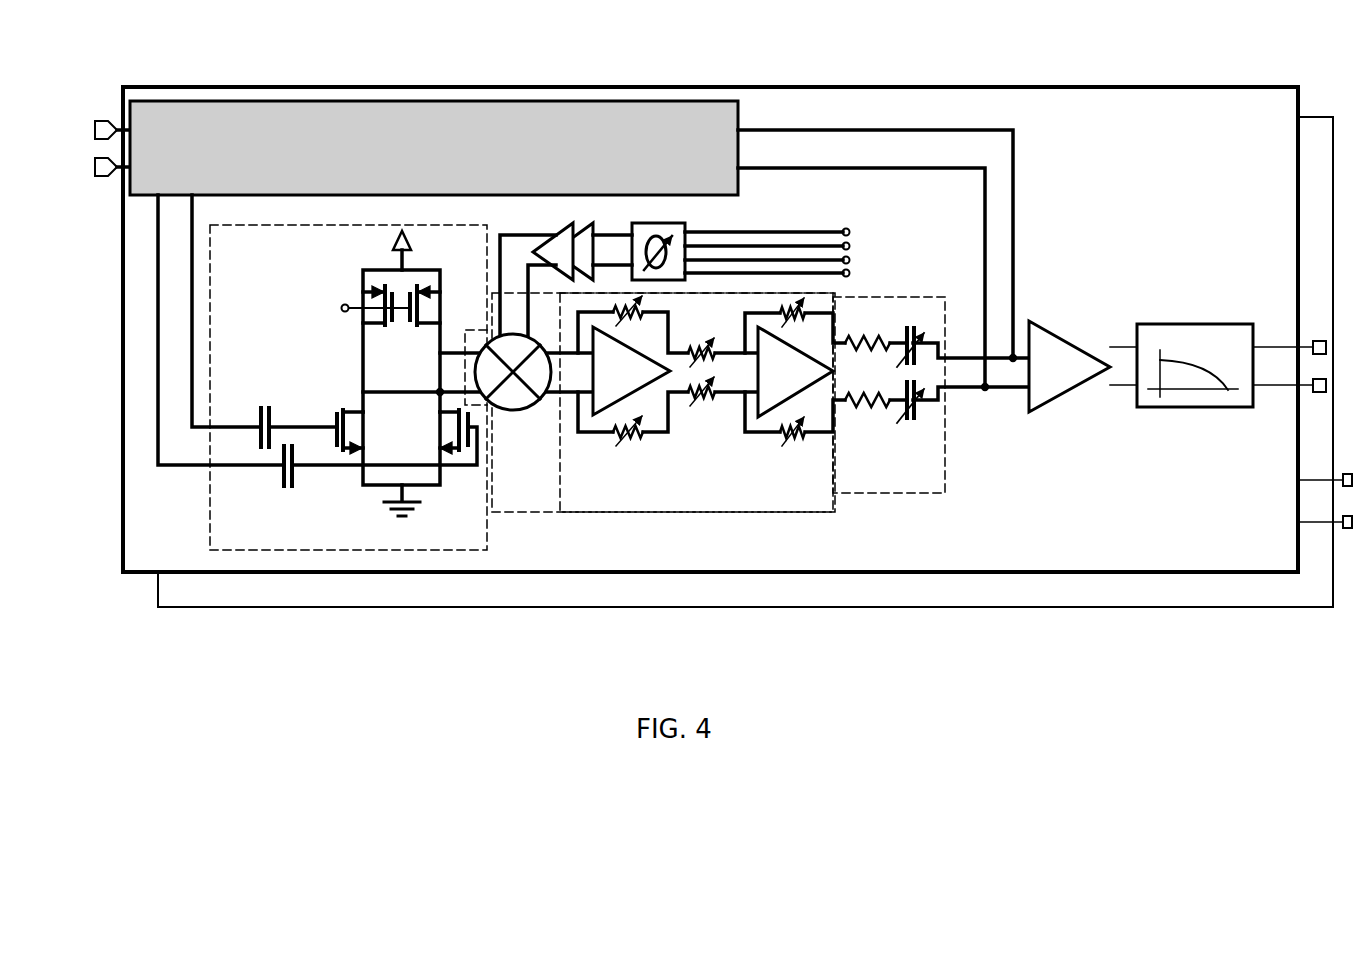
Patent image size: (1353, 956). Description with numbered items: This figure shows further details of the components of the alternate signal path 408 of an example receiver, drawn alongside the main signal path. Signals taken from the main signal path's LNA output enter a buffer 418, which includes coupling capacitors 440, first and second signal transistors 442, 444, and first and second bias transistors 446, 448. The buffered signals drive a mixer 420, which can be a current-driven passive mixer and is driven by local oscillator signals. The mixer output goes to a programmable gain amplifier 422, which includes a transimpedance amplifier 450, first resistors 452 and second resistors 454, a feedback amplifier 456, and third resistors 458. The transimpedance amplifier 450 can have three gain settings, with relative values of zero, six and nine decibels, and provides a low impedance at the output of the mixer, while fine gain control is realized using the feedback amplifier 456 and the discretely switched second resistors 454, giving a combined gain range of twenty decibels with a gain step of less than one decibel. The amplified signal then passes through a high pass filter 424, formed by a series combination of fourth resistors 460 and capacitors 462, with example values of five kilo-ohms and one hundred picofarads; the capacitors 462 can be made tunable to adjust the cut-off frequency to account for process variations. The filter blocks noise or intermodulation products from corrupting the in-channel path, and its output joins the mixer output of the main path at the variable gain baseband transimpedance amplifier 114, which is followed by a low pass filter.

The alternate signal path 408 is at (121, 410).
The buffer 418 is at (377, 551).
The mixer 420 is at (540, 514).
The programmable gain amplifier 422 is at (672, 514).
The high pass filter 424 is at (918, 496).
The coupling capacitors C_C 440 is at (251, 422).
The signal transistor M1 442 is at (344, 408).
The signal transistor M2 444 is at (430, 408).
The bias transistor M3 446 is at (357, 273).
The bias transistor M4 448 is at (448, 270).
The transimpedance amplifier 450 is at (603, 412).
The resistors R1 452 is at (646, 306).
The resistors R2 454 is at (732, 333).
The feedback amplifier 456 is at (771, 410).
The resistors R3 458 is at (790, 305).
The resistors R4 460 is at (880, 327).
The capacitors C4 462 is at (922, 323).
The variable gain baseband transimpedance amplifier 114 is at (1070, 389).